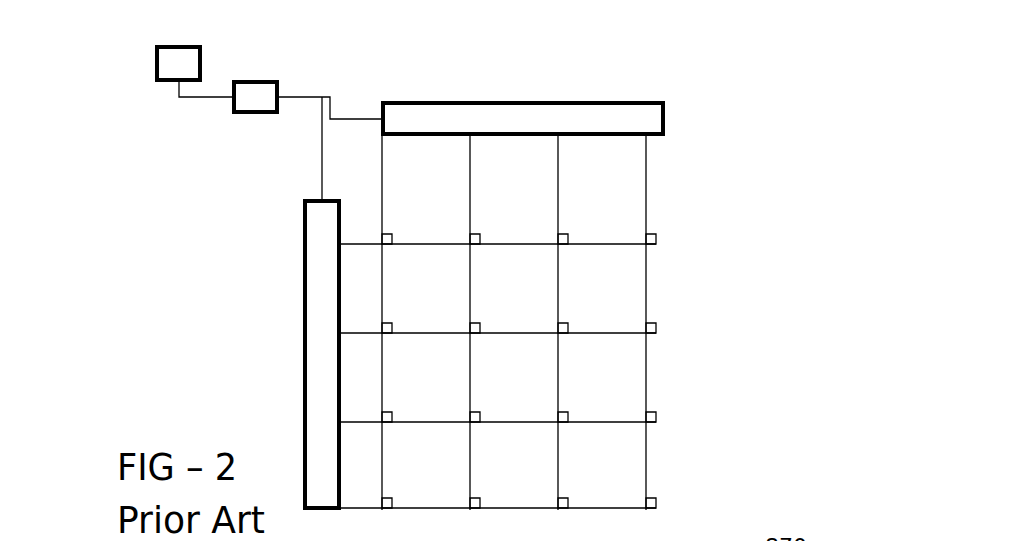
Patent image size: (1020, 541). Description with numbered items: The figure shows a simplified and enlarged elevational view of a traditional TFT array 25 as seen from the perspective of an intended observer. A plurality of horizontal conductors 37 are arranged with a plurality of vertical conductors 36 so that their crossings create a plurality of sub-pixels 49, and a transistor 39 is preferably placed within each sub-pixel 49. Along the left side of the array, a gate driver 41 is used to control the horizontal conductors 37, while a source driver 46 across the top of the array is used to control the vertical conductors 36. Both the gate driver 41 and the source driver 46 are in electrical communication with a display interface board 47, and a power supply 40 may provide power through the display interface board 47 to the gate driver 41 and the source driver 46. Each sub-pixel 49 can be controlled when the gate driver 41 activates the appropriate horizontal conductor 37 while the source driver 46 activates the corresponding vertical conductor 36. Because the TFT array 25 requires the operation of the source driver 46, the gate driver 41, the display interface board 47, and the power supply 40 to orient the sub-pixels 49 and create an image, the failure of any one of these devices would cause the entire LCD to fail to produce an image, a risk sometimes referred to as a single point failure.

The power supply 40 is at (168, 62).
The display interface board 47 is at (255, 92).
The source driver 46 is at (642, 124).
The gate driver 41 is at (288, 198).
The TFT array 25 is at (588, 329).
The vertical conductors 36 is at (468, 288).
The horizontal conductors 37 is at (600, 335).
The transistor 39 is at (658, 321).
The sub-pixel 49 is at (623, 467).